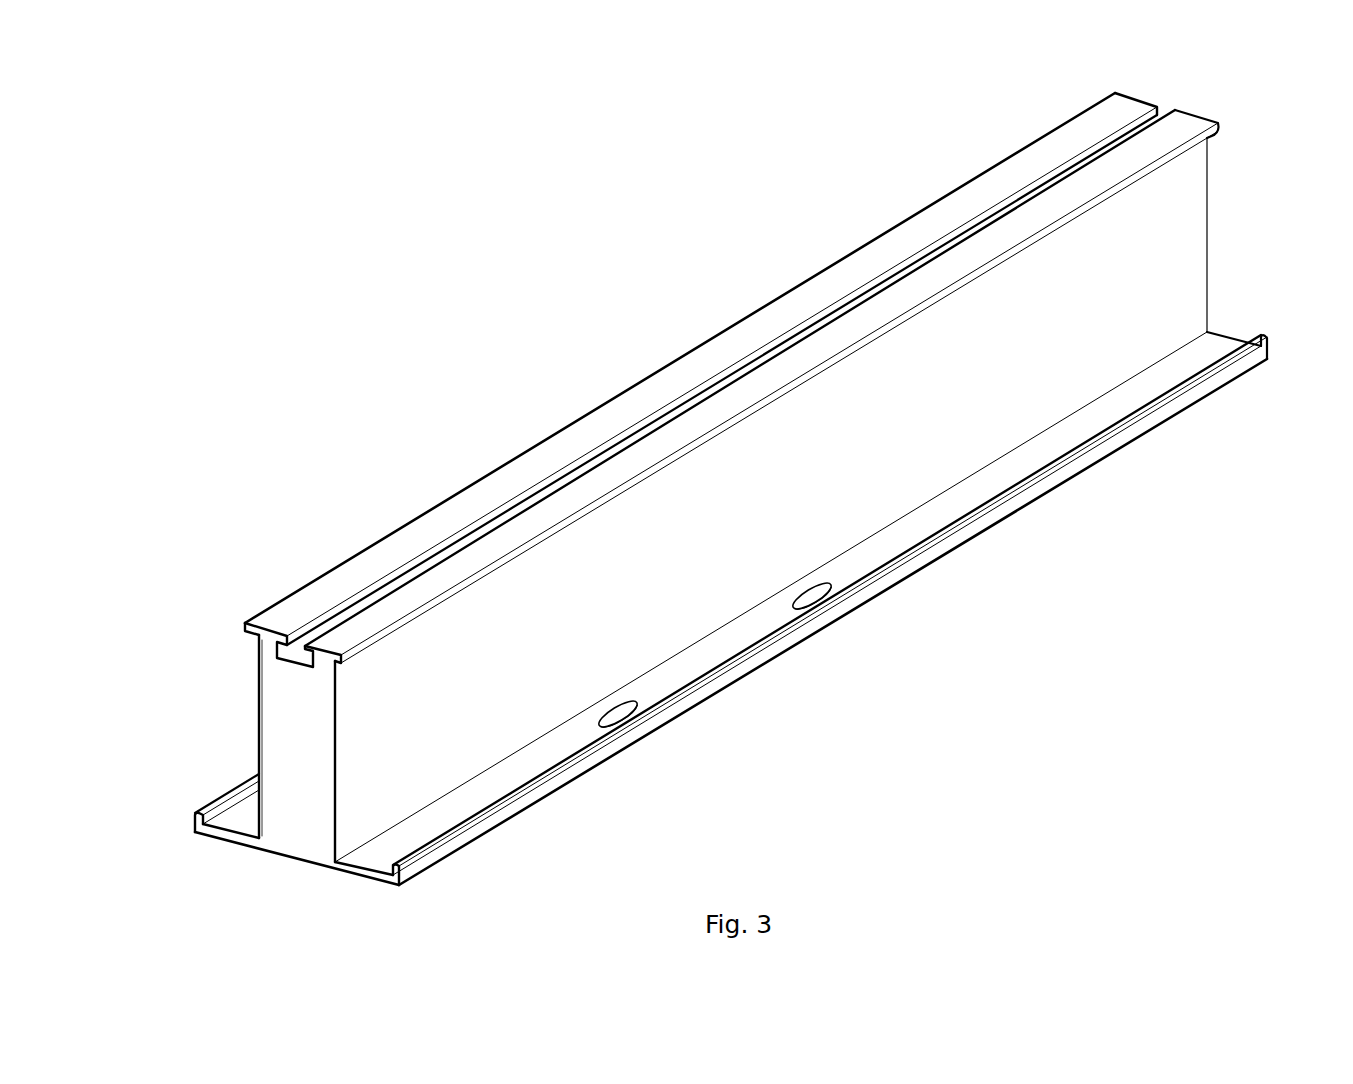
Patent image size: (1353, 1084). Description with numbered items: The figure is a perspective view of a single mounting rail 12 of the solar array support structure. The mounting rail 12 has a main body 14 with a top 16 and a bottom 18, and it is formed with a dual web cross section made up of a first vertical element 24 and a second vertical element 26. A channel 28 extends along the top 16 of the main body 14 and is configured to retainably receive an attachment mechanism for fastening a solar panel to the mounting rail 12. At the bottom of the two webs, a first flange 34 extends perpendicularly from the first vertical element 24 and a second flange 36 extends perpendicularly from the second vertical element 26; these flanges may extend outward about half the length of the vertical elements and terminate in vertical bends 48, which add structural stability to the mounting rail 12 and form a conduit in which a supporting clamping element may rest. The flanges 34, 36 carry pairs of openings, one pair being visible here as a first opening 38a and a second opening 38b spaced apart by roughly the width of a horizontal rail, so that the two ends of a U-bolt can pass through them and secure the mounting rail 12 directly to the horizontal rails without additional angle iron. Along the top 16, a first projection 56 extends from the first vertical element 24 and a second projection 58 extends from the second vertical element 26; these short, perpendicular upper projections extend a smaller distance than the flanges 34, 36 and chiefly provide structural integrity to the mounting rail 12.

The mounting rail 12 is at (403, 427).
The main body 14 is at (668, 613).
The top 16 is at (292, 610).
The bottom 18 is at (303, 835).
The first vertical element 24 is at (338, 763).
The second vertical element 26 is at (257, 697).
The channel 28 is at (648, 422).
The first flange 34 is at (520, 769).
The second flange 36 is at (237, 827).
The first opening 38a is at (610, 715).
The second opening 38b is at (812, 590).
The vertical bend 48 is at (238, 797).
The first projection 56 is at (912, 298).
The second projection 58 is at (848, 275).